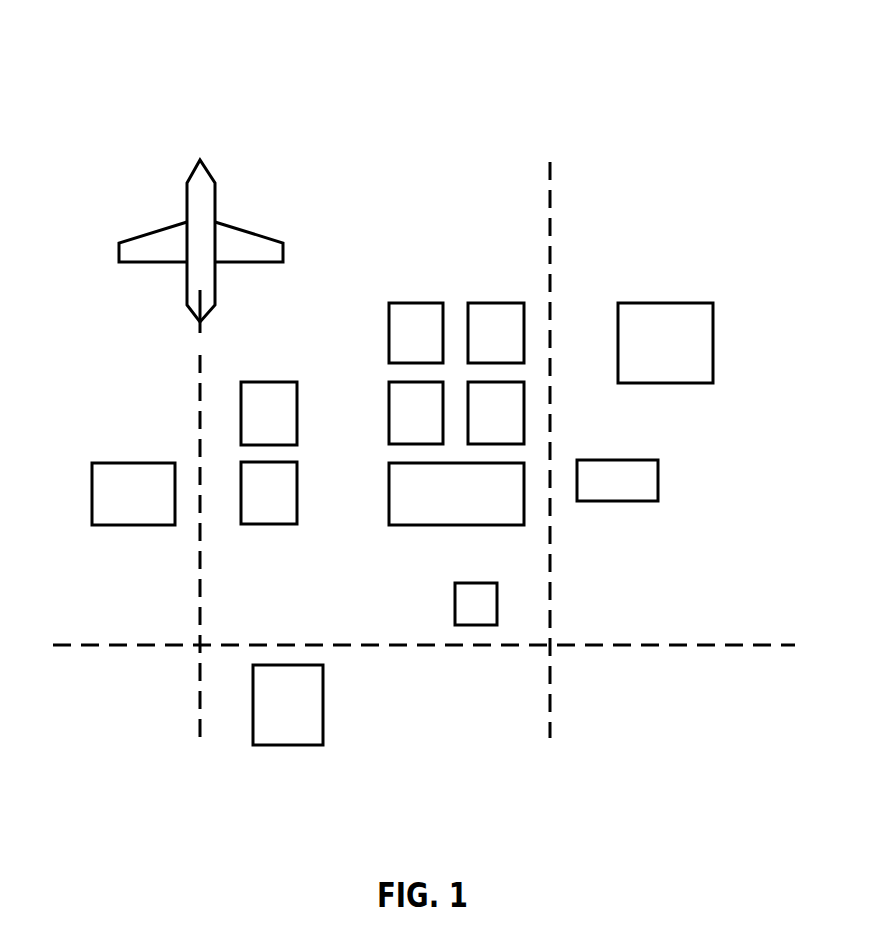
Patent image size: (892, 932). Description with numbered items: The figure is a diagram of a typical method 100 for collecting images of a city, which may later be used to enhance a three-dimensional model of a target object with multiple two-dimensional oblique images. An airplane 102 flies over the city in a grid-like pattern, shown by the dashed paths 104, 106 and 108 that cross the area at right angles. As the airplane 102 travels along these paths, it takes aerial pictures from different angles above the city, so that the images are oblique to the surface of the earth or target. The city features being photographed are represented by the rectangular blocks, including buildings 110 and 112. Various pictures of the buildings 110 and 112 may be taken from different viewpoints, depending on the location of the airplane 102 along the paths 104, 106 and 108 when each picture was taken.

The method for collecting images 100 is at (377, 86).
The airplane 102 is at (185, 202).
The path 104 is at (199, 402).
The path 106 is at (148, 645).
The path 108 is at (550, 220).
The building 110 is at (713, 322).
The building 112 is at (658, 480).